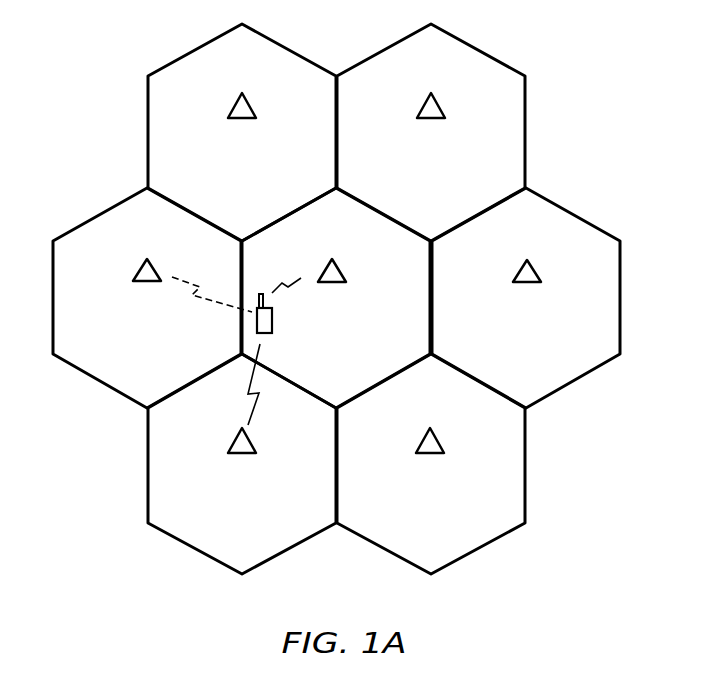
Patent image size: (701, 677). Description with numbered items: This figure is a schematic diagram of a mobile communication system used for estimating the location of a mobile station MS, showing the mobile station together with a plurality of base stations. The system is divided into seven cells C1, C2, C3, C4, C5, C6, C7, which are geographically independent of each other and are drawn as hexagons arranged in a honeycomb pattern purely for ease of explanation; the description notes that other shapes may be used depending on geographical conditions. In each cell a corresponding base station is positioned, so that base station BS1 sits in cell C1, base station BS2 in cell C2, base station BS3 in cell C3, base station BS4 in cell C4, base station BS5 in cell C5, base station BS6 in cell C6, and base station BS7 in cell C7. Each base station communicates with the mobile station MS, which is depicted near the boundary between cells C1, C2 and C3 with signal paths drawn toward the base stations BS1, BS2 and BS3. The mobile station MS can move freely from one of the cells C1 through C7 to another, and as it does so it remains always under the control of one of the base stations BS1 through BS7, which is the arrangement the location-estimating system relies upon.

The base station BS1 is at (151, 288).
The base station BS2 is at (244, 458).
The base station BS3 is at (334, 288).
The base station BS4 is at (433, 458).
The base station BS5 is at (531, 289).
The base station BS6 is at (243, 122).
The base station BS7 is at (434, 122).
The cell C1 is at (147, 298).
The cell C2 is at (242, 464).
The cell C3 is at (336, 298).
The cell C4 is at (431, 464).
The cell C5 is at (526, 298).
The cell C6 is at (242, 132).
The cell C7 is at (431, 132).
The mobile station MS is at (236, 351).